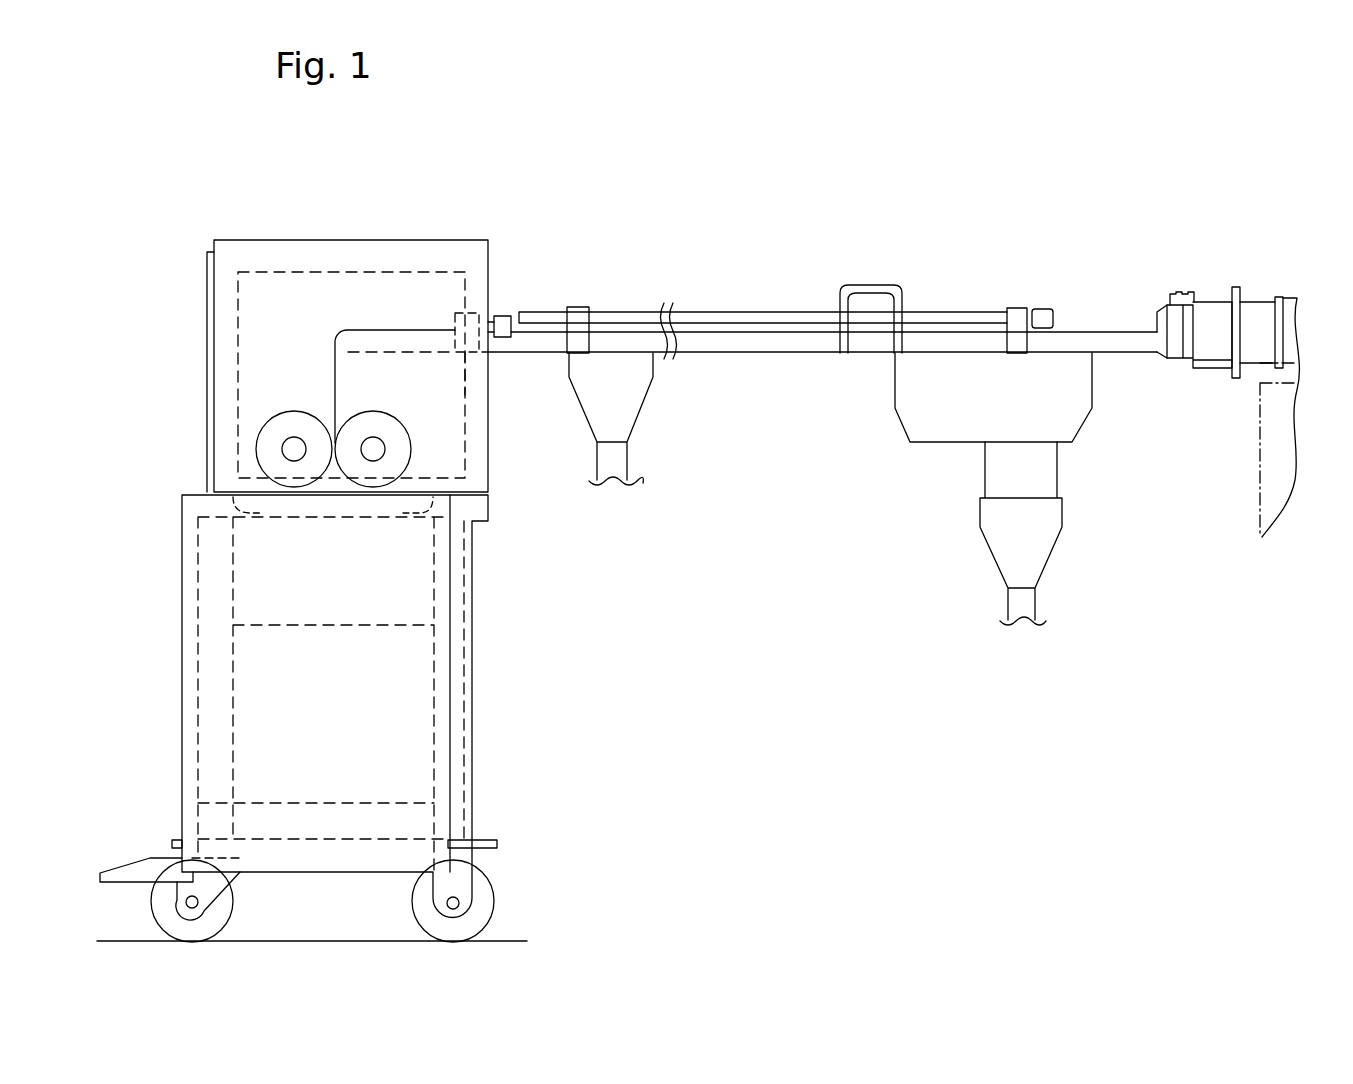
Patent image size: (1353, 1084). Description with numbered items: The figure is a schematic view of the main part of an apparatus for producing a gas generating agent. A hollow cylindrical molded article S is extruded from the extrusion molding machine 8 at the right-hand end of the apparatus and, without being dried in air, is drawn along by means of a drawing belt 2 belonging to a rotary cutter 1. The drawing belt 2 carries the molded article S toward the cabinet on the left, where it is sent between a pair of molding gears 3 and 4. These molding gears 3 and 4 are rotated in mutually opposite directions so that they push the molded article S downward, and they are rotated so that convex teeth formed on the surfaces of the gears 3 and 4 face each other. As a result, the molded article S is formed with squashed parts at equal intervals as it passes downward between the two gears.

The rotary cutter 1 is at (1026, 270).
The drawing belt 2 is at (812, 313).
The molding gear 3 is at (266, 440).
The molding gear 4 is at (396, 432).
The extrusion molding machine 8 is at (1208, 318).
The molded article S is at (331, 372).